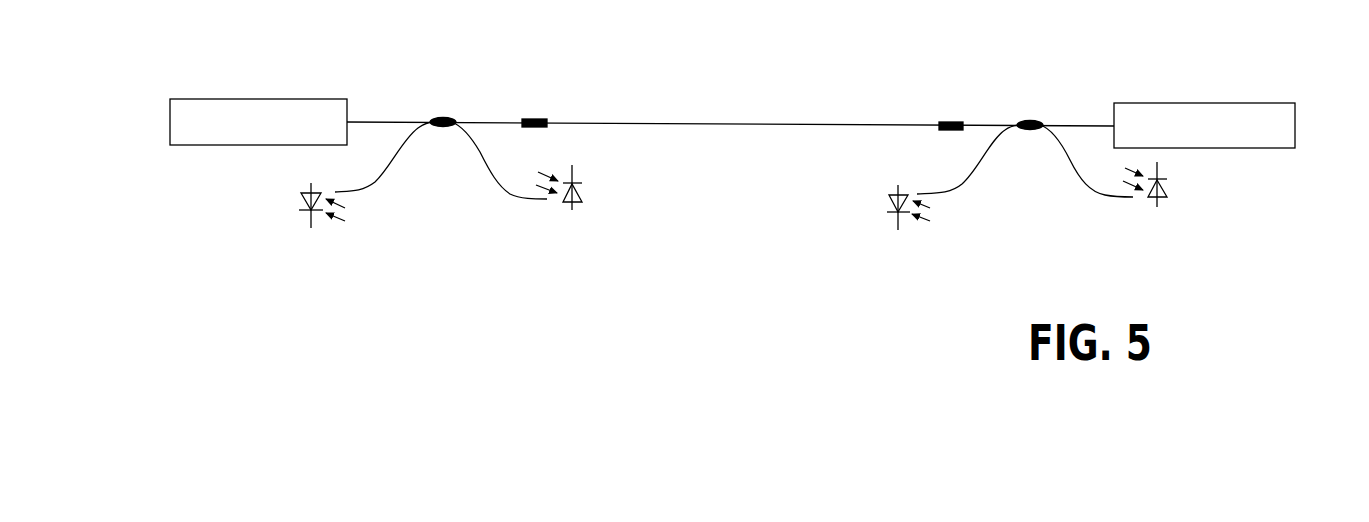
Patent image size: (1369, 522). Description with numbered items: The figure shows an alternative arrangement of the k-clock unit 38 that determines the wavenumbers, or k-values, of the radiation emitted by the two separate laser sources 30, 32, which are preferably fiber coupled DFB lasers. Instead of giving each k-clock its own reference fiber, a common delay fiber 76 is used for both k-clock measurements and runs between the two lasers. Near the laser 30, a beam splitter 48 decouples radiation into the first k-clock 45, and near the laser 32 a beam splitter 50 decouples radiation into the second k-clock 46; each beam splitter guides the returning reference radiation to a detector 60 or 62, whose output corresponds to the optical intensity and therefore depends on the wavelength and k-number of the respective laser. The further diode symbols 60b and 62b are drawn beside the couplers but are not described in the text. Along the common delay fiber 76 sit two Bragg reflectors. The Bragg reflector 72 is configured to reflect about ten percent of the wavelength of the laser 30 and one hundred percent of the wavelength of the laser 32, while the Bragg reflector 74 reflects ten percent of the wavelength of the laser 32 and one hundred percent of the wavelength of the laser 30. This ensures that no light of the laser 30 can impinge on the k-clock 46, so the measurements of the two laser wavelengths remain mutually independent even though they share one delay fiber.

The laser source 30 is at (214, 109).
The laser source 32 is at (1247, 112).
The k-clock unit 38 is at (675, 327).
The k-clock 45 is at (469, 179).
The k-clock 46 is at (1060, 185).
The beam splitter 48 is at (444, 120).
The beam splitter 50 is at (1027, 123).
The detector 60 is at (312, 216).
The photodetector diode 60b is at (574, 170).
The detector 62 is at (1160, 185).
The light emitting diode 62b is at (898, 220).
The Bragg reflector 72 is at (533, 118).
The Bragg reflector 74 is at (952, 122).
The common delay fiber 76 is at (752, 122).